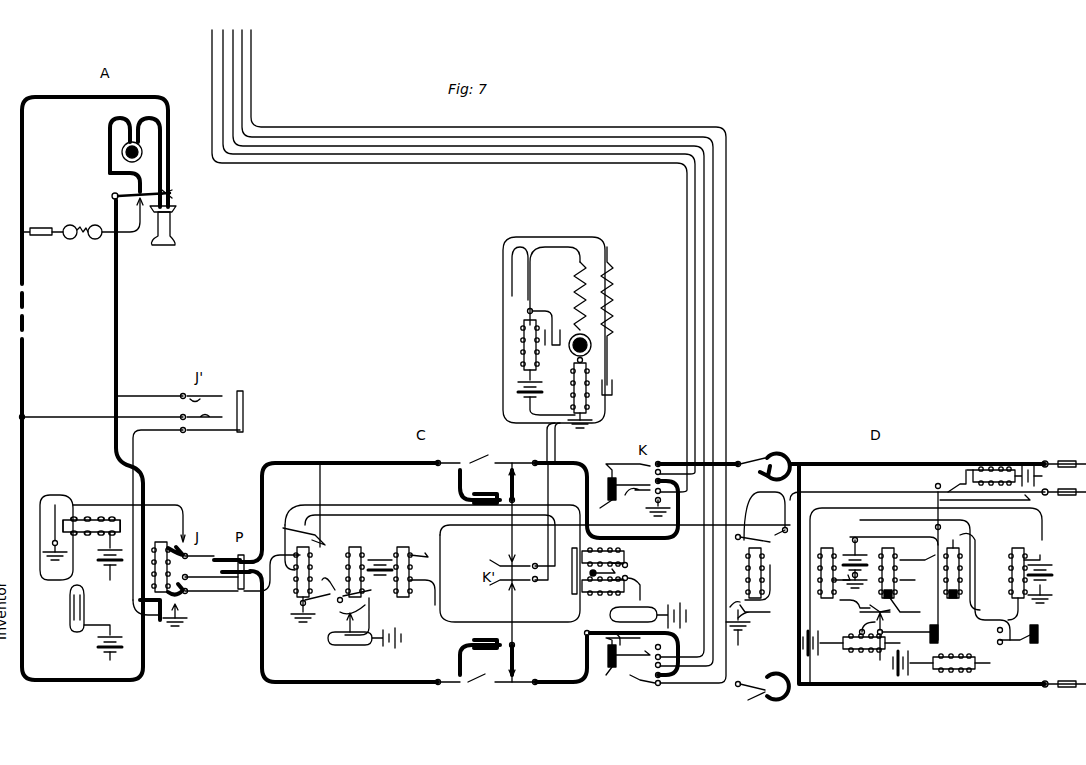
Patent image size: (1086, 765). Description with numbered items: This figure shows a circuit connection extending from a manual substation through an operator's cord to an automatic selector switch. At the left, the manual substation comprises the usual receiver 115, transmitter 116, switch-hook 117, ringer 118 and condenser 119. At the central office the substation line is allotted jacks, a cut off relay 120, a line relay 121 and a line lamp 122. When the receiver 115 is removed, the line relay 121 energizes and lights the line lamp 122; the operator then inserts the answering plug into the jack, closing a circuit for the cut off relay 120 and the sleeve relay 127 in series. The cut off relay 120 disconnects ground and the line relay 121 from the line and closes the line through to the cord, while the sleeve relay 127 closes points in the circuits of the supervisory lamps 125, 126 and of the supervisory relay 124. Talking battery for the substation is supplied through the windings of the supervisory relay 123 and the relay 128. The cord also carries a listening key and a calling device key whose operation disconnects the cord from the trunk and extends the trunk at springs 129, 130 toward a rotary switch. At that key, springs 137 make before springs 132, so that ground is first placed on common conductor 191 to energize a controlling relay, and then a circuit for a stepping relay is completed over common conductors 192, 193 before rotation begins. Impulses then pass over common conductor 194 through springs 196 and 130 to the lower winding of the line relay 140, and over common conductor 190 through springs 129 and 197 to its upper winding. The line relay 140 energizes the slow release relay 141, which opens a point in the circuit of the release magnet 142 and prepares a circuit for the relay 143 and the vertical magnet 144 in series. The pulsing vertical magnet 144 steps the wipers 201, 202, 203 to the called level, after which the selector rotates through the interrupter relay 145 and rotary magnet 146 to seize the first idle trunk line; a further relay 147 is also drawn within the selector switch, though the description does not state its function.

The receiver 115 is at (176, 228).
The transmitter 116 is at (122, 144).
The switch-hook 117 is at (114, 194).
The ringer 118 is at (95, 239).
The condenser 119 is at (44, 240).
The cut off relay 120 is at (152, 582).
The line relay 121 is at (98, 520).
The line lamp 122 is at (85, 600).
The supervisory relay 123 is at (358, 552).
The supervisory relay 124 is at (628, 556).
The supervisory lamp 125 is at (332, 648).
The supervisory lamp 126 is at (648, 607).
The sleeve relay 127 is at (320, 612).
The relay 128 is at (418, 576).
The springs 129 is at (610, 478).
The springs 130 is at (612, 670).
The springs 132 is at (585, 636).
The springs 137 is at (655, 506).
The line relay 140 is at (827, 550).
The slow release relay 141 is at (900, 575).
The release magnet 142 is at (865, 650).
The relay 143 is at (953, 548).
The vertical magnet 144 is at (978, 663).
The interrupter relay 145 is at (1030, 594).
The rotary magnet 146 is at (993, 470).
The relay 147 is at (762, 570).
The common conductor 190 is at (248, 48).
The common conductor 191 is at (250, 60).
The common conductor 192 is at (250, 72).
The common conductor 193 is at (252, 86).
The common conductor 194 is at (254, 100).
The springs 196 is at (765, 693).
The springs 197 is at (768, 458).
The wiper 201 is at (1060, 681).
The wiper 202 is at (1064, 496).
The wiper 203 is at (1062, 460).